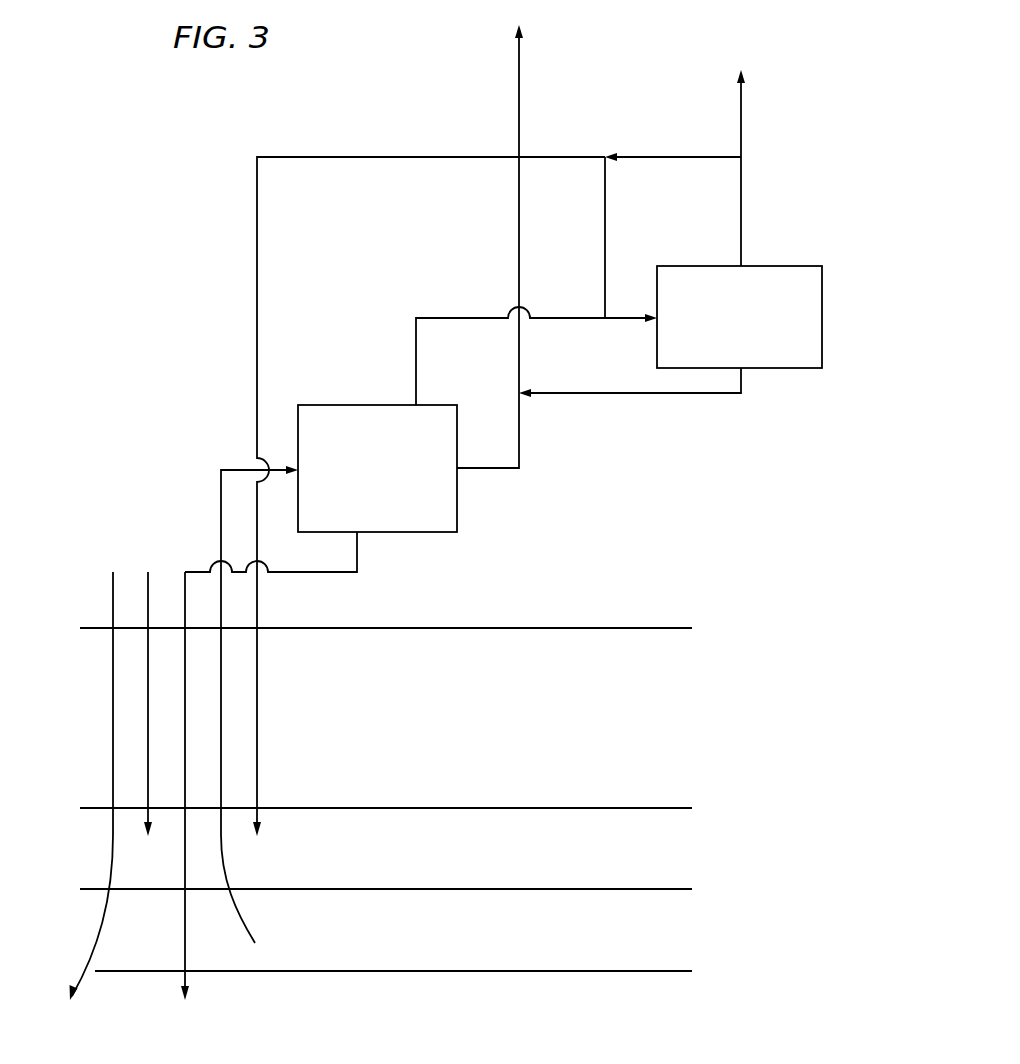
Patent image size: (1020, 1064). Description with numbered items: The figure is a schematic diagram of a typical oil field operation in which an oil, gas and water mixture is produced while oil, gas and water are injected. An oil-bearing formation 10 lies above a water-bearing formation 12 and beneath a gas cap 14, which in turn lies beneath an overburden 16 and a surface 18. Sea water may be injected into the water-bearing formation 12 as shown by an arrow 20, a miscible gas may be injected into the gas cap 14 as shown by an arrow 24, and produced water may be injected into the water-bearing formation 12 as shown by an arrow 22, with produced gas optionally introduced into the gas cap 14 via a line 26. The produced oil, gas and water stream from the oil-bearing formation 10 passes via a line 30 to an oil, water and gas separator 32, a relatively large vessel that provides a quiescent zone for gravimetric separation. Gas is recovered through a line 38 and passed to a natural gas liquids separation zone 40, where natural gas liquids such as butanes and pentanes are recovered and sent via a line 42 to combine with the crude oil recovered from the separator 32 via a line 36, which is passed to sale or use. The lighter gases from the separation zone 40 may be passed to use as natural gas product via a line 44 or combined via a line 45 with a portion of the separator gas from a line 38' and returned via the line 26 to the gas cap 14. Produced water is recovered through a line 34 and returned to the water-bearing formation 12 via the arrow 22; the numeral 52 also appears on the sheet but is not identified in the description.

The oil-bearing formation 10 is at (580, 944).
The water-bearing formation 12 is at (597, 1024).
The gas cap 14 is at (608, 861).
The overburden 16 is at (622, 728).
The surface 18 is at (538, 627).
The arrow 20 is at (113, 753).
The arrow 22 is at (185, 946).
The arrow 24 is at (148, 685).
The line 26 is at (257, 688).
The line 30 is at (221, 522).
The oil, water and gas separator 32 is at (407, 533).
The line 34 is at (310, 574).
The line 36 is at (519, 447).
The line 38 is at (536, 332).
The line 38' is at (577, 237).
The natural gas liquids separation zone 40 is at (823, 322).
The line 42 is at (660, 394).
The line 44 is at (741, 212).
The line 45 is at (655, 155).
The formation reference 52 is at (745, 1054).